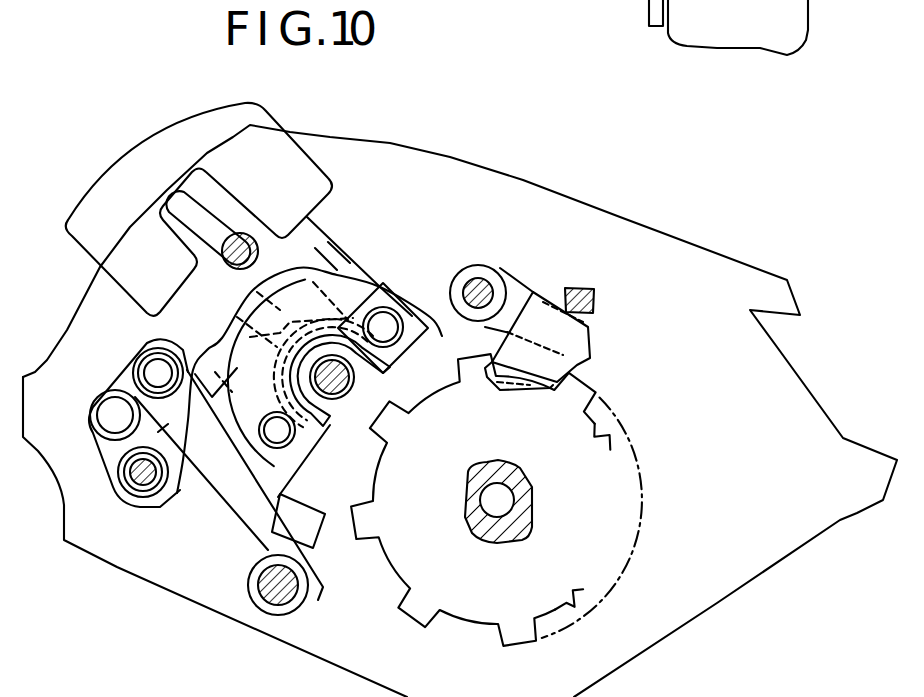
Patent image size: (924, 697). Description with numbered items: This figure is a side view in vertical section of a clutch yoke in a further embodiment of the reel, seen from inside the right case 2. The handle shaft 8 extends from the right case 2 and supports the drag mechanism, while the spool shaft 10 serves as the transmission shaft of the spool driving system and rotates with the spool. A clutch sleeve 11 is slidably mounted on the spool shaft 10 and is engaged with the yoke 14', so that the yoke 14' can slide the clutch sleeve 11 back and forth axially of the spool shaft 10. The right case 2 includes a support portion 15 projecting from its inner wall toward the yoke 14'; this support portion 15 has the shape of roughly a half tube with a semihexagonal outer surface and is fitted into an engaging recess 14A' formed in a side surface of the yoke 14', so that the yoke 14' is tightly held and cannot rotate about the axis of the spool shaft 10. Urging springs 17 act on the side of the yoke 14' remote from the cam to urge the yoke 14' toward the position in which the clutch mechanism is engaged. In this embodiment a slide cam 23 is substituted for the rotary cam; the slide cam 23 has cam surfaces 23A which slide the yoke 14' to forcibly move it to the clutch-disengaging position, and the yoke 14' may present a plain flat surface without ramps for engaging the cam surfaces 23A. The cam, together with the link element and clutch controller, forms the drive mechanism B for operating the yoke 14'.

The right case 2 is at (717, 603).
The handle shaft 8 is at (532, 497).
The spool shaft 10 is at (342, 392).
The clutch sleeve 11 is at (382, 416).
The yoke 14' is at (500, 309).
The engaging recess 14A' is at (323, 261).
The support portion 15 is at (243, 323).
The urging springs 17 is at (227, 452).
The slide cam 23 is at (153, 330).
The cam surfaces 23A is at (310, 250).
The drive mechanism B is at (410, 188).